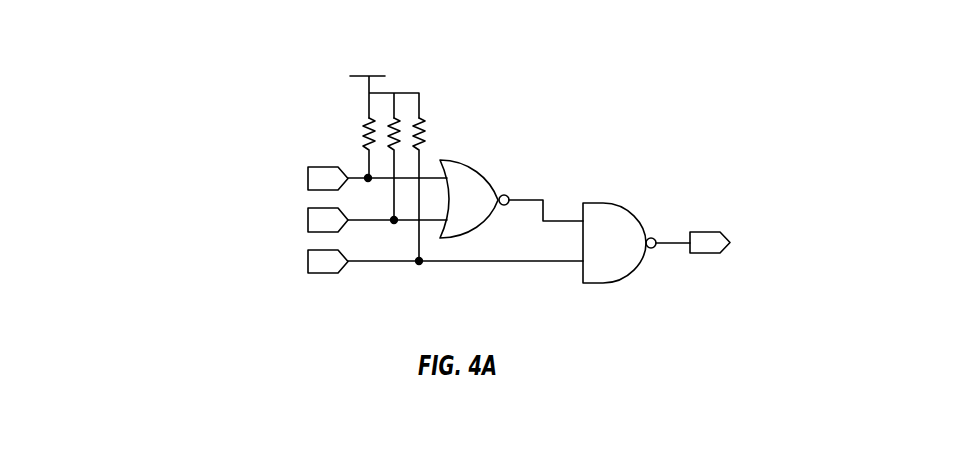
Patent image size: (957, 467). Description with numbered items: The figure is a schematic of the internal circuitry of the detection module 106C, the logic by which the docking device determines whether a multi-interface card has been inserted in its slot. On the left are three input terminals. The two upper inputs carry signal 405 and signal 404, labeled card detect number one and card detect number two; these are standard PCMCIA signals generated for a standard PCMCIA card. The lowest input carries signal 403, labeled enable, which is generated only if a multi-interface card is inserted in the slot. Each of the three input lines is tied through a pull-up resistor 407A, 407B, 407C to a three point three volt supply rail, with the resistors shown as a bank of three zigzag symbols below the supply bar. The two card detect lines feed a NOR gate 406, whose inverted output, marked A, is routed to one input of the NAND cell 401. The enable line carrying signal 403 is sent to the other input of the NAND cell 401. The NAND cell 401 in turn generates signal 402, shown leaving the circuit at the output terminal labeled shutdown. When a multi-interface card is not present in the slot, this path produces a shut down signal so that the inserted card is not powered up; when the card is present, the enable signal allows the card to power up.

The detection module 106C is at (276, 36).
The NAND cell 401 is at (630, 216).
The signal 402 is at (713, 232).
The signal 403 is at (318, 250).
The signal 404 is at (318, 208).
The signal 405 is at (318, 167).
The NOR gate 406 is at (493, 186).
The pull-up resistor 407A is at (366, 118).
The pull-up resistor 407B is at (413, 120).
The pull-up resistor 407C is at (420, 142).